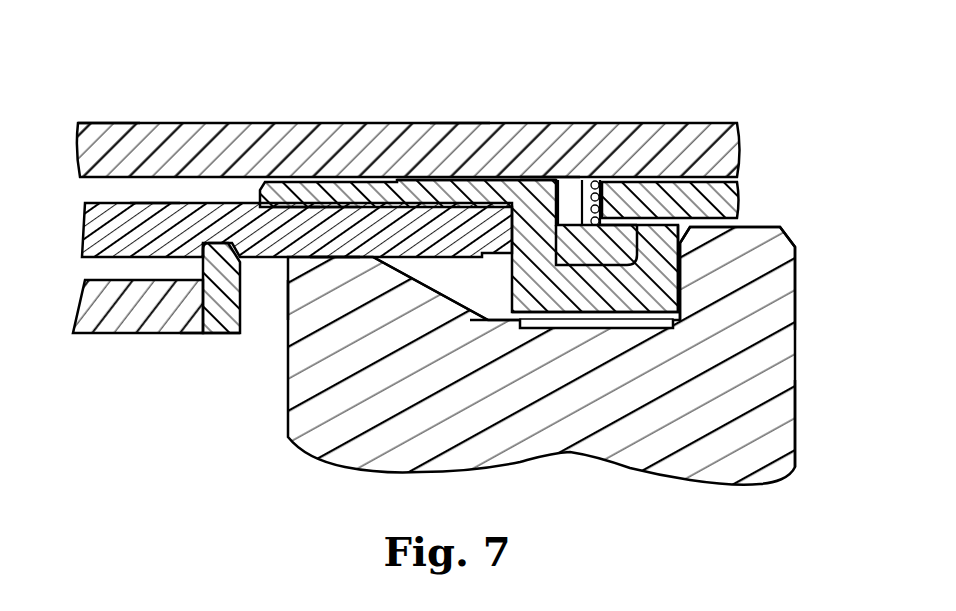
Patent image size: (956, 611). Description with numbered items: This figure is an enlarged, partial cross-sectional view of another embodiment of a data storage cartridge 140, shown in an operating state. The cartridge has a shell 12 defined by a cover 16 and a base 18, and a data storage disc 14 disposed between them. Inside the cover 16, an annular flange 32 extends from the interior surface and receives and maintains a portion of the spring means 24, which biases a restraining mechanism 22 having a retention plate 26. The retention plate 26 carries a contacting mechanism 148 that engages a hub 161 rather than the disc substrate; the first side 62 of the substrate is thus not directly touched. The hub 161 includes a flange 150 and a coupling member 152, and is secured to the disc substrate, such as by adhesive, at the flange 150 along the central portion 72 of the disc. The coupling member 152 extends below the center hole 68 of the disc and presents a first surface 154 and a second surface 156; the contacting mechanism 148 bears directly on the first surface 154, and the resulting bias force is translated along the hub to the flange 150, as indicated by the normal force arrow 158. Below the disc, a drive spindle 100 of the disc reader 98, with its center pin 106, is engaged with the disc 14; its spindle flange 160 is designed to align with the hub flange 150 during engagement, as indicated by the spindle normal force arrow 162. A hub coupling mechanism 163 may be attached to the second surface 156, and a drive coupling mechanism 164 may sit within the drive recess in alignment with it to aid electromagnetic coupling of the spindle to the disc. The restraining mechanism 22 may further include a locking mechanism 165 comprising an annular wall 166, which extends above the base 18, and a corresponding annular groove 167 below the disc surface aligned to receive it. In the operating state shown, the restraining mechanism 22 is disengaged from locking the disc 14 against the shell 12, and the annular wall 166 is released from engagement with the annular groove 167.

The shell 12 is at (340, 57).
The data storage disc 14 is at (192, 200).
The cover 16 is at (459, 123).
The base 18 is at (93, 336).
The restraining mechanism 22 is at (746, 176).
The spring means 24 is at (597, 176).
The retention plate 26 is at (742, 197).
The annular flange 32 is at (550, 177).
The first side 62 is at (157, 203).
The center hole 68 is at (510, 259).
The central portion 72 is at (295, 203).
The disc reader 98 is at (815, 374).
The drive spindle 100 is at (797, 444).
The center pin 106 is at (800, 266).
The data storage cartridge 140 is at (118, 106).
The contacting mechanism 148 is at (578, 222).
The flange 150 is at (430, 192).
The coupling member 152 is at (667, 275).
The first surface 154 is at (610, 260).
The second surface 156 is at (677, 323).
The normal force arrow 158 is at (336, 200).
The spindle flange 160 is at (288, 297).
The hub 161 is at (398, 176).
The spindle normal force arrow 162 is at (335, 264).
The hub coupling mechanism 163 is at (495, 322).
The drive coupling mechanism 164 is at (537, 328).
The locking mechanism 165 is at (210, 350).
The annular wall 166 is at (205, 282).
The annular groove 167 is at (205, 264).